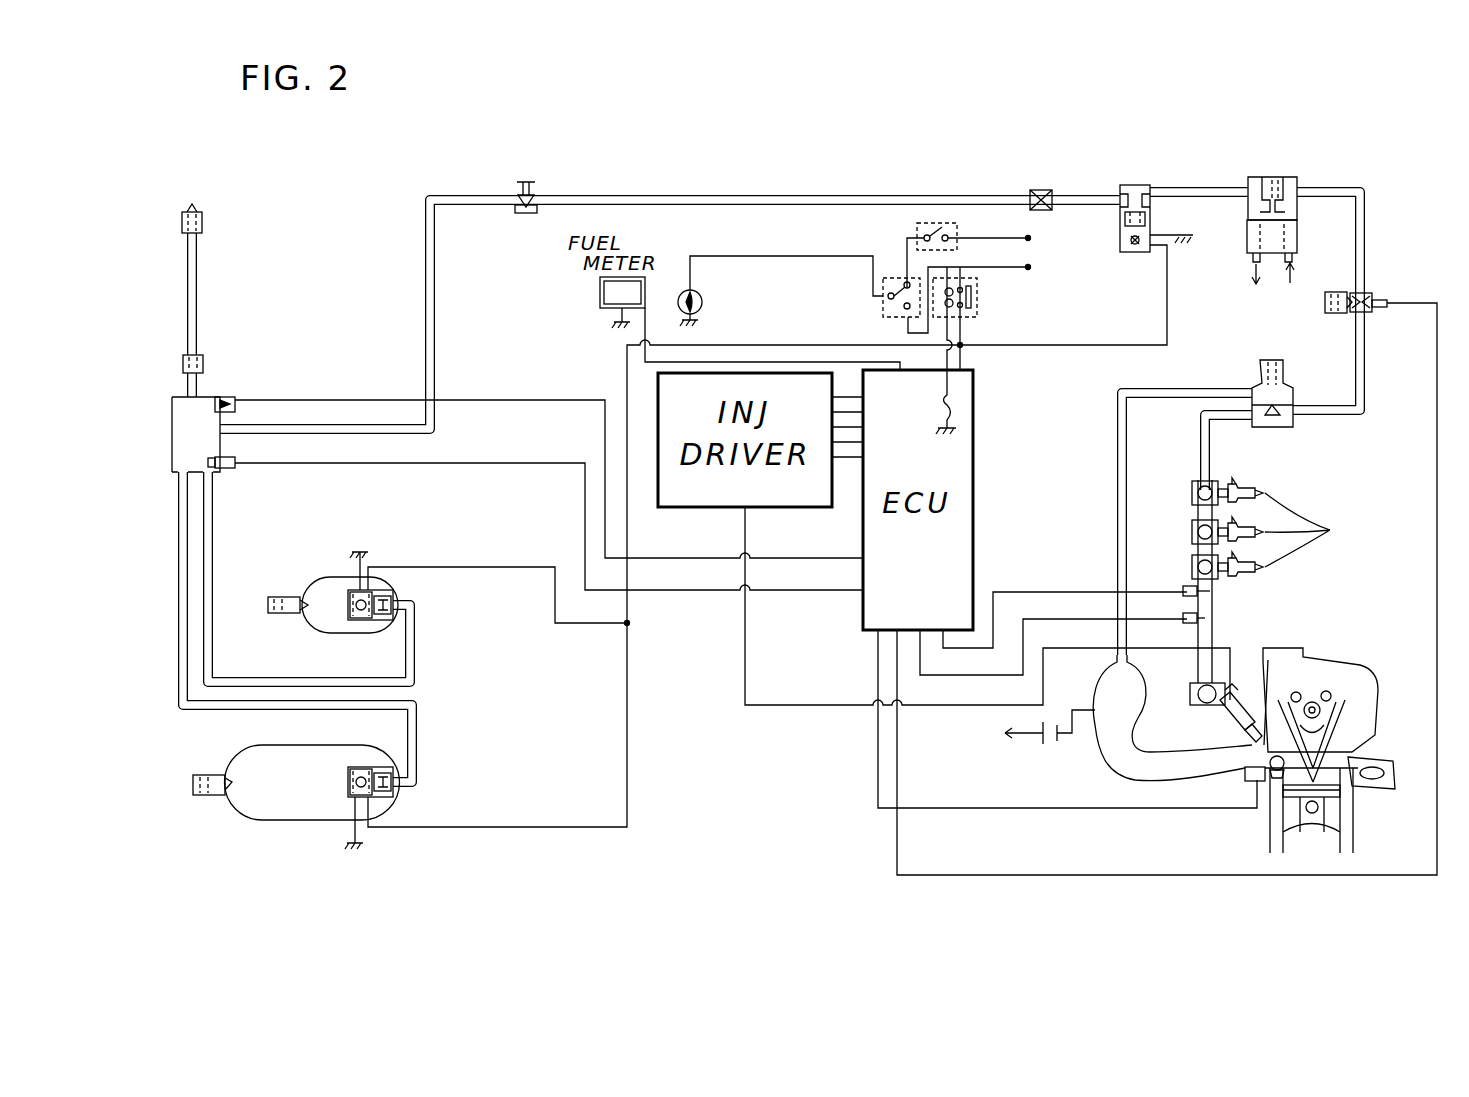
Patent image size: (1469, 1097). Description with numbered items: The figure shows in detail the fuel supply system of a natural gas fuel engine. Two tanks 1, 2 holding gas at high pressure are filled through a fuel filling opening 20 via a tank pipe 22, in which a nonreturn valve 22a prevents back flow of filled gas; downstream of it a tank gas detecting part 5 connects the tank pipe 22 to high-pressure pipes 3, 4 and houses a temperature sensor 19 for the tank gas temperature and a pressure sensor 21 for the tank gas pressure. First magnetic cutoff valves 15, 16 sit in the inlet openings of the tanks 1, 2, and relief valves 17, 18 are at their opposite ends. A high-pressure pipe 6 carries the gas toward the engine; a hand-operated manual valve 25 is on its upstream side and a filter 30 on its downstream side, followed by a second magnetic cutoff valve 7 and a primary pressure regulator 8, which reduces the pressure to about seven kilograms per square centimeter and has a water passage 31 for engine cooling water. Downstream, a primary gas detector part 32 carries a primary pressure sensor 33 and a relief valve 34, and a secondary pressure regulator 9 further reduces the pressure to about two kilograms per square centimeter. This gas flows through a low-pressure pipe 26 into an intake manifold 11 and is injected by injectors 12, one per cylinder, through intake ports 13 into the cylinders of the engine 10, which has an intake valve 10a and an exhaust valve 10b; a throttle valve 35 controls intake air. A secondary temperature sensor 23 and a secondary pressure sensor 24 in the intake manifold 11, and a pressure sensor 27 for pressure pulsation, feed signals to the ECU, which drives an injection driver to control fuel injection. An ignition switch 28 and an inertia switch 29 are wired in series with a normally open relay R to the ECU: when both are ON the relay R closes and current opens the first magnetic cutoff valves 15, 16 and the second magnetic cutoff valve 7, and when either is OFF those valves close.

The tank 1 is at (307, 808).
The tank 2 is at (318, 588).
The high-pressure pipe 3 is at (183, 637).
The high-pressure pipe 4 is at (208, 572).
The tank gas detecting part 5 is at (188, 405).
The high-pressure pipe 6 is at (432, 290).
The second magnetic cutoff valve 7 is at (1135, 185).
The primary pressure regulator 8 is at (1273, 177).
The secondary pressure regulator 9 is at (1292, 427).
The gas engine 10 is at (1355, 836).
The intake valve 10a is at (1340, 697).
The exhaust valve 10b is at (1367, 753).
The intake manifold 11 is at (1213, 640).
The injectors 12 is at (1178, 720).
The intake port 13 is at (1273, 792).
The first magnetic cutoff valve 15 is at (383, 797).
The first magnetic cutoff valve 16 is at (385, 622).
The relief valve 17 is at (210, 797).
The relief valve 18 is at (278, 613).
The temperature sensor 19 is at (228, 470).
The fuel filling opening 20 is at (203, 222).
The pressure sensor 21 is at (235, 407).
The tank pipe 22 is at (197, 283).
The nonreturn valve 22a is at (203, 362).
The secondary temperature sensor 23 is at (1188, 615).
The secondary pressure sensor 24 is at (1190, 585).
The manual valve 25 is at (528, 188).
The low-pressure pipe 26 is at (1200, 453).
The pressure sensor 27 is at (1245, 775).
The ignition switch 28 is at (935, 223).
The inertia switch 29 is at (878, 304).
The filter 30 is at (1050, 190).
The water passage 31 is at (1275, 237).
The primary gas detector part 32 is at (1367, 293).
The primary pressure sensor 33 is at (1380, 307).
The relief valve 34 is at (1338, 313).
The throttle valve 35 is at (1045, 745).
The normally open relay R is at (985, 300).